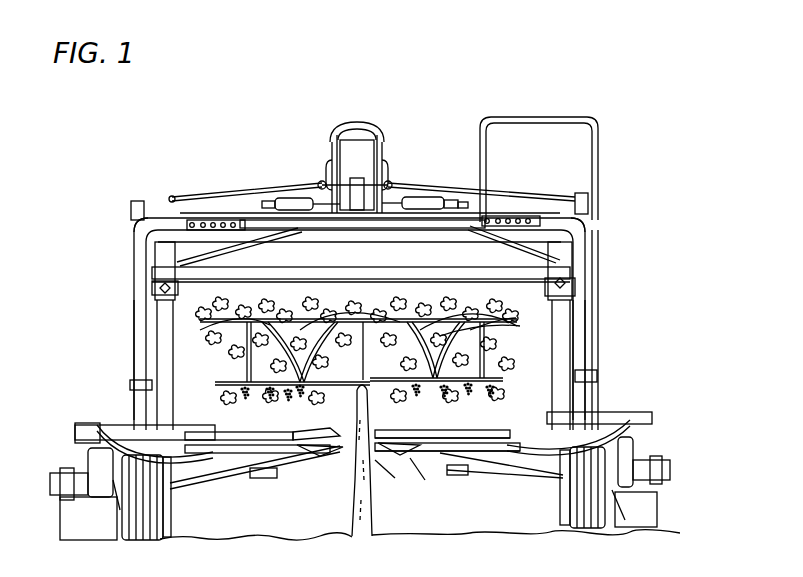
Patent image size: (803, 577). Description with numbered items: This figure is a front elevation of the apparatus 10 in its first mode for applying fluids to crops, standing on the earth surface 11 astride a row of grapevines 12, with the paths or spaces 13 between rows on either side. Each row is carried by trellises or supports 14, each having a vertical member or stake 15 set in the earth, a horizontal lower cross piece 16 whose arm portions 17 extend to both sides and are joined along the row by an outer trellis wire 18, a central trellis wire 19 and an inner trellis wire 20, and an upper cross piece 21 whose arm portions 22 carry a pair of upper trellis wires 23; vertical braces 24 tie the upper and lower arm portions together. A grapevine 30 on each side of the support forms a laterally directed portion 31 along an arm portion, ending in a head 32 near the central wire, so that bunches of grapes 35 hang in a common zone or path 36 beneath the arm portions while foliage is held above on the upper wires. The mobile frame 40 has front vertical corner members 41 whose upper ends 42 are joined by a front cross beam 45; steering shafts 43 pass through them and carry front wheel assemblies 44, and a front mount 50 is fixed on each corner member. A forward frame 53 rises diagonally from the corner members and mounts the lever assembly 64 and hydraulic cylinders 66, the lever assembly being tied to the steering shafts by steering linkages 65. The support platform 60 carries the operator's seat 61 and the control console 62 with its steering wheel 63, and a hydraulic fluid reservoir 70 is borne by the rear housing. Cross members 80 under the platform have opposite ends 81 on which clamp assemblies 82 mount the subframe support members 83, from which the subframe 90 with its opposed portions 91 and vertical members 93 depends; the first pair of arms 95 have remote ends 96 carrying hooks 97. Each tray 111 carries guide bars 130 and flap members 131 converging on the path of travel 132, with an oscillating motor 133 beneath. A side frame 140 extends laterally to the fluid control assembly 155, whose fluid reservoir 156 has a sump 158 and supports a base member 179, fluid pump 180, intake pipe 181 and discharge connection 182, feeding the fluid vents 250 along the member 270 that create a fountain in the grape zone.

The apparatus 10 is at (190, 170).
The earth surface 11 is at (320, 535).
The row of grapevines 12 is at (374, 518).
The paths or spaces 13 is at (186, 538).
The trellises or supports 14 is at (236, 371).
The vertical member or stake 15 is at (358, 304).
The lower cross piece 16 is at (242, 397).
The arm portions 17 is at (490, 380).
The outer trellis wire 18 is at (294, 391).
The central trellis wire 19 is at (294, 401).
The inner trellis wire 20 is at (312, 389).
The upper cross piece 21 is at (500, 323).
The arm portions 22 is at (505, 327).
The upper trellis wires 23 is at (366, 341).
The vertical braces 24 is at (246, 361).
The grapevine 30 is at (348, 495).
The upper, laterally directed portion 31 is at (383, 350).
The head 32 is at (466, 350).
The bunches of grapes 35 is at (488, 401).
The common zone or path 36 is at (272, 401).
The vehicle or mobile frame 40 is at (126, 272).
The front vertical corner members 41 is at (134, 353).
The upper ends 42 is at (138, 225).
The steering shafts 43 is at (132, 208).
The front wheel assembly 44 is at (578, 529).
The front cross beam 45 is at (170, 197).
The front mount 50 is at (130, 385).
The forward frame 53 is at (405, 228).
The support platform 60 is at (372, 253).
The operator's seat 61 is at (390, 150).
The control console 62 is at (369, 165).
The steering wheel 63 is at (352, 124).
The lever assembly 64 is at (346, 182).
The steering linkages 65 is at (232, 193).
The hydraulic cylinders 66 is at (292, 198).
The hydraulic fluid reservoir 70 is at (565, 115).
The cross members 80 is at (305, 275).
The opposite ends 81 is at (165, 272).
The bracket 82 is at (544, 288).
The subframe support member 83 is at (160, 289).
The subframe 90 is at (578, 307).
The opposed portions 91 is at (192, 489).
The vertical member 93 is at (590, 327).
The first pair of arms 95 is at (252, 432).
The remote ends 96 is at (442, 427).
The hooks 97 is at (445, 441).
The panel, trough or tray 111 is at (218, 469).
The guide bars 130 is at (428, 482).
The flap members 131 is at (334, 457).
The path of travel 132 is at (393, 480).
The oscillating motor 133 is at (262, 479).
The side frame 140 is at (78, 424).
The fluid control assembly 155 is at (72, 434).
The fluid reservoir 156 is at (80, 527).
The sump 158 is at (118, 541).
The base member 179 is at (60, 501).
The fluid pump 180 is at (98, 486).
The intake pipe 181 is at (112, 509).
The discharge connection 182 is at (100, 424).
The fluid ports or vents 250 is at (317, 432).
The beam 270 is at (262, 271).